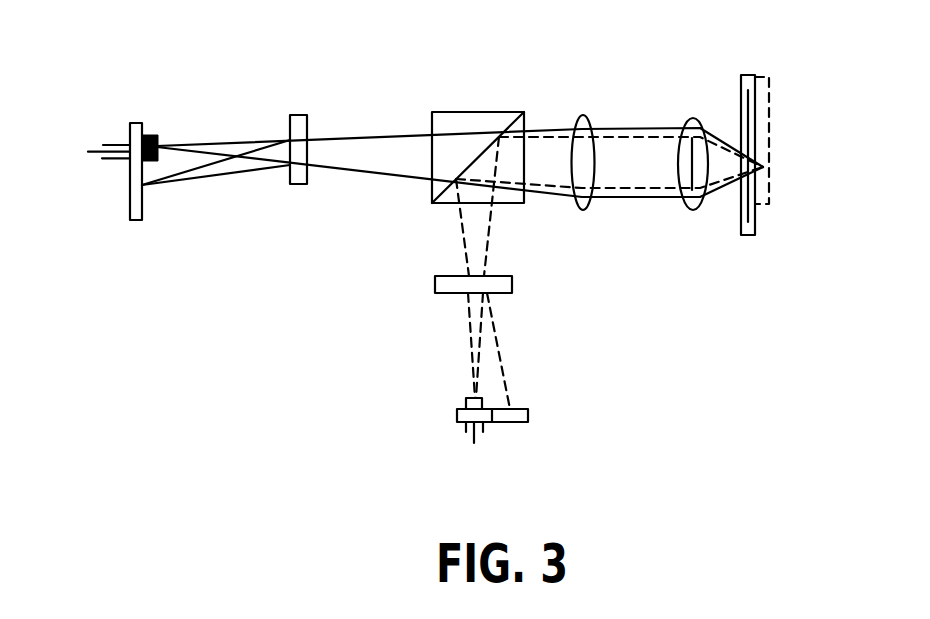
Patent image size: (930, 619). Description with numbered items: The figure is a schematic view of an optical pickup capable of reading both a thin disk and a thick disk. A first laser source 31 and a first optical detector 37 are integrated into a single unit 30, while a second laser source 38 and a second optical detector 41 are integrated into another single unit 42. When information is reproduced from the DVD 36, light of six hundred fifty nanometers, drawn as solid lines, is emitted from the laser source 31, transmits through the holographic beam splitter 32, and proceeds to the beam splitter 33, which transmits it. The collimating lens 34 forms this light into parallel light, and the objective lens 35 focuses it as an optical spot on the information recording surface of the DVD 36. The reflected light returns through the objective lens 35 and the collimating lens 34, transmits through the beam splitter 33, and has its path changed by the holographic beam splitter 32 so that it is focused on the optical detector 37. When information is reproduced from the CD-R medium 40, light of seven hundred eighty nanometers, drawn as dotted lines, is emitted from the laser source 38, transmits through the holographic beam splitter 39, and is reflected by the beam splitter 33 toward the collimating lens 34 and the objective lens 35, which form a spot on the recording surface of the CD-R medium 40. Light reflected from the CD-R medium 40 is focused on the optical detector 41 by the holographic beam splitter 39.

The single unit 30 is at (140, 156).
The laser source 31 is at (148, 137).
The holographic beam splitter 32 is at (298, 118).
The beam splitter 33 is at (470, 120).
The collimating lens 34 is at (582, 116).
The objective lens 35 is at (693, 118).
The DVD 36 is at (747, 225).
The optical detector 37 is at (138, 200).
The laser source 38 is at (467, 400).
The holographic beam splitter 39 is at (505, 289).
The CD-R medium 40 is at (768, 166).
The optical detector 41 is at (528, 417).
The single unit 42 is at (457, 418).